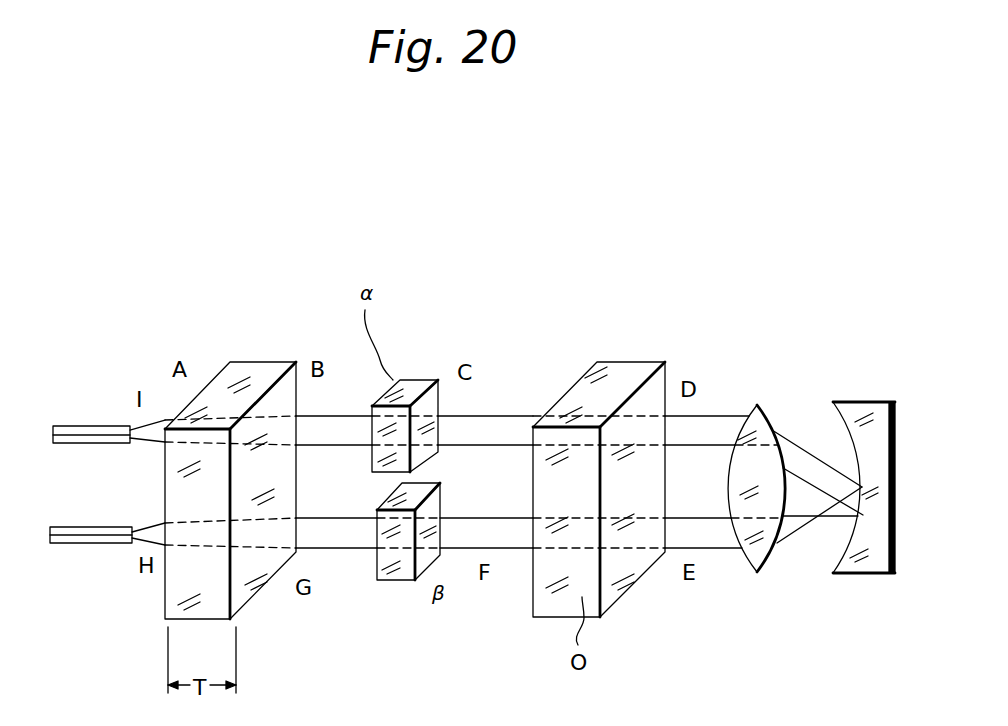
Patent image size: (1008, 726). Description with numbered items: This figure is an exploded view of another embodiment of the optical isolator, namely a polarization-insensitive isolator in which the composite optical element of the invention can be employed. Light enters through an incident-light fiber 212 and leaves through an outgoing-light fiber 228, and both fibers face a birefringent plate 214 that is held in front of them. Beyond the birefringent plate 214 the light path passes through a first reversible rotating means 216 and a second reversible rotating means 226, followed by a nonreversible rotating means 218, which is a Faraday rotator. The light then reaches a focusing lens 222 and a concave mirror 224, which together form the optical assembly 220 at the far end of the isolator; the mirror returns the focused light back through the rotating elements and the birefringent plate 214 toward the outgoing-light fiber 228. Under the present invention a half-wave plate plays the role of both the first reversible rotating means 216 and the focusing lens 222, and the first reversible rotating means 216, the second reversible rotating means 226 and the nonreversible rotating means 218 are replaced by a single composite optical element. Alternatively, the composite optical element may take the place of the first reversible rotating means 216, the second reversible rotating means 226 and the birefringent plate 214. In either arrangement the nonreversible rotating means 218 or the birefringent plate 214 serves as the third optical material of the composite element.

The incident-light fiber 212 is at (90, 423).
The birefringent plate 214 is at (250, 362).
The first reversible rotating means 216 is at (428, 380).
The nonreversible rotating means (Faraday rotator) 218 is at (638, 362).
The optical system 220 is at (738, 391).
The focusing lens 222 is at (753, 572).
The concave mirror 224 is at (860, 575).
The second reversible rotating means 226 is at (402, 573).
The outgoing-light fiber 228 is at (80, 547).